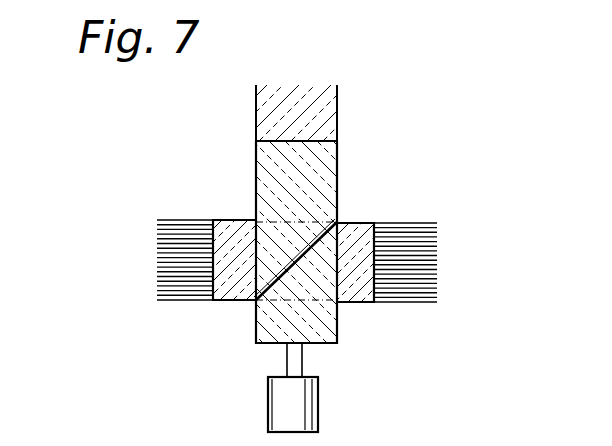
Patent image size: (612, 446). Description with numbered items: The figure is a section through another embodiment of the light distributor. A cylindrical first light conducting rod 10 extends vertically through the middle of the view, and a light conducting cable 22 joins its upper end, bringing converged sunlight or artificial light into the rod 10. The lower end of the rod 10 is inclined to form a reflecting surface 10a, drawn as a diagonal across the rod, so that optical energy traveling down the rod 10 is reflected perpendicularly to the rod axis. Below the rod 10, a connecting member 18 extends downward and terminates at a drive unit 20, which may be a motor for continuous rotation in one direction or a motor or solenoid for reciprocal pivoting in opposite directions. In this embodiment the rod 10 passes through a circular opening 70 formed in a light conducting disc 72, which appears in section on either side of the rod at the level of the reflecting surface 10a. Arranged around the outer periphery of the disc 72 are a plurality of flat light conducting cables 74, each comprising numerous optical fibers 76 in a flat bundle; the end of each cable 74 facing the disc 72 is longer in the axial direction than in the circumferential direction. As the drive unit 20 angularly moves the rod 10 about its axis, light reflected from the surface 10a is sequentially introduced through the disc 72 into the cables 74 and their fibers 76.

The light conducting rod 10 is at (337, 174).
The reflecting surface 10a is at (325, 221).
The connecting member 18 is at (294, 268).
The drive unit 20 is at (318, 411).
The light conducting cable 22 is at (340, 100).
The circular opening 70 is at (265, 218).
The light conducting disc 72 is at (357, 304).
The flat light conducting cables 74 is at (182, 218).
The optical fibers 76 is at (193, 262).